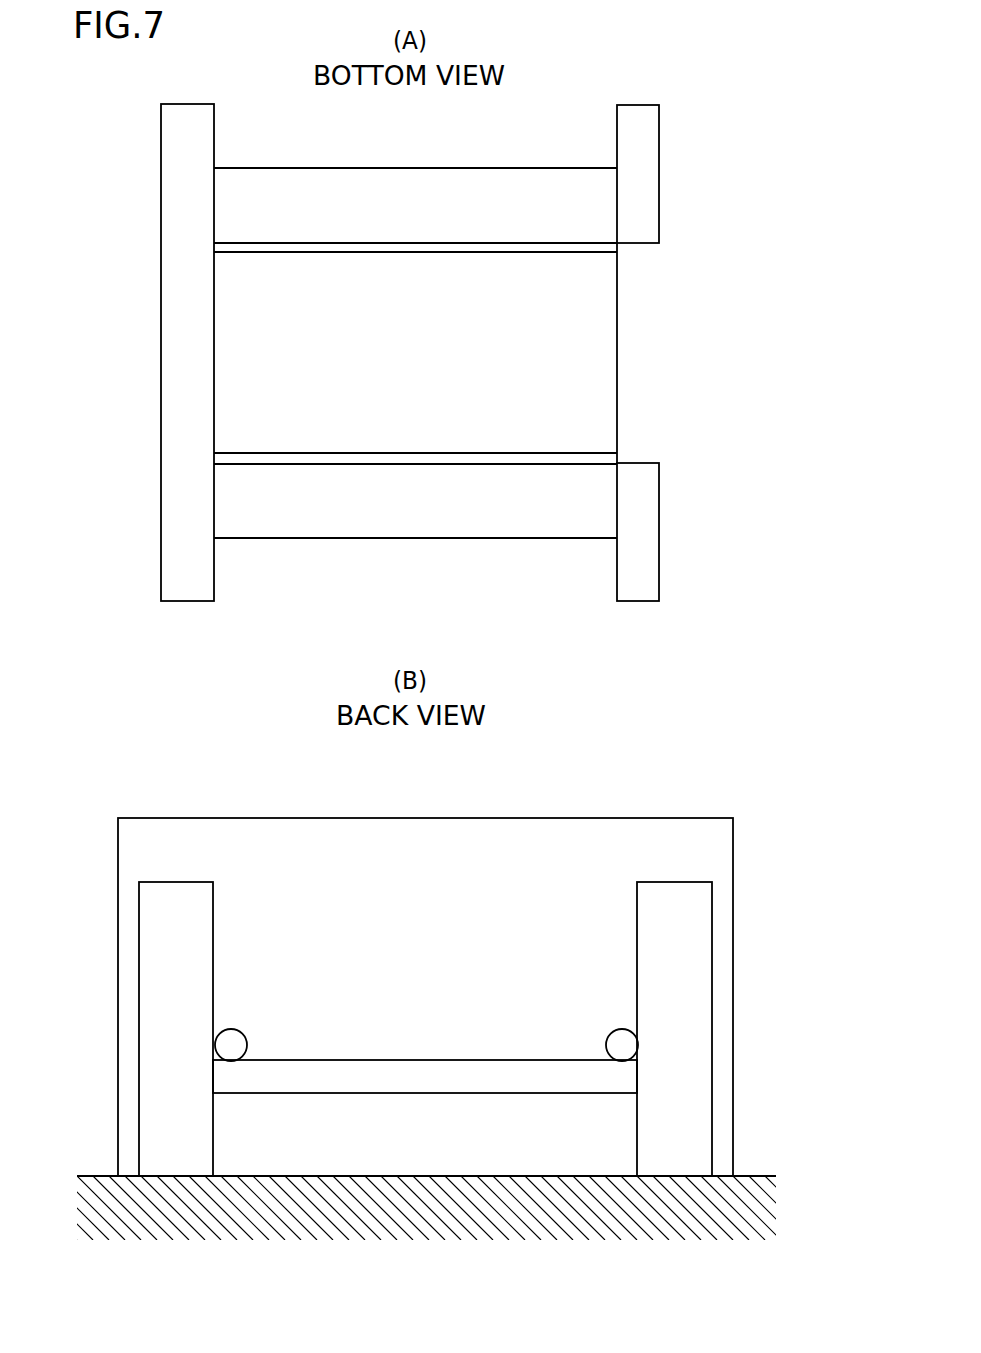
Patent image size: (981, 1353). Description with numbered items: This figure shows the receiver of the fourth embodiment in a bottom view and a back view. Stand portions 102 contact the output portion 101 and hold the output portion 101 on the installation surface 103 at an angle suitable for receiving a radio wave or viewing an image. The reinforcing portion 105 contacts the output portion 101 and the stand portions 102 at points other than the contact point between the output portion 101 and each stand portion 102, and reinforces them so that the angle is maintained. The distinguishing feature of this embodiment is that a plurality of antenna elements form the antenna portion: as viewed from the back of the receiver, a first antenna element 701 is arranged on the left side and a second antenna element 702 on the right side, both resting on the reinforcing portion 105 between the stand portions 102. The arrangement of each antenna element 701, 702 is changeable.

The output portion 101 is at (161, 220).
The stand portions 102 is at (659, 148).
The installation surface 103 is at (103, 1175).
The reinforcing portion 105 is at (617, 328).
The first antenna element 701 is at (422, 253).
The second antenna element 702 is at (405, 452).